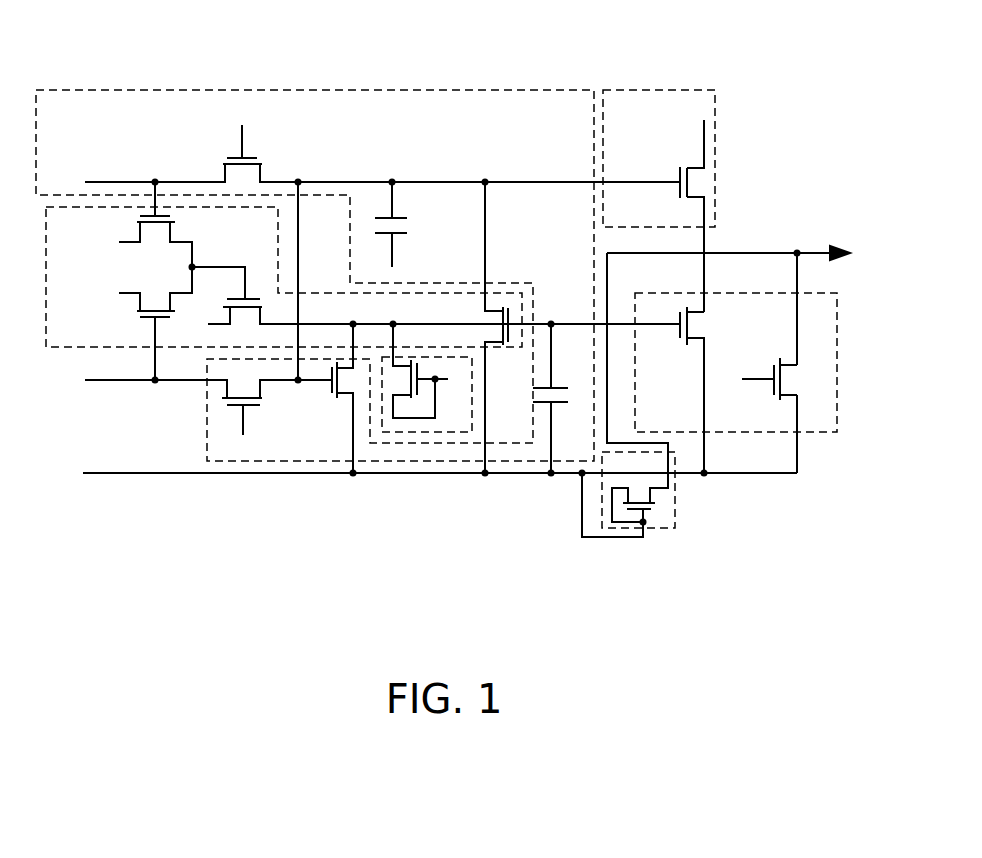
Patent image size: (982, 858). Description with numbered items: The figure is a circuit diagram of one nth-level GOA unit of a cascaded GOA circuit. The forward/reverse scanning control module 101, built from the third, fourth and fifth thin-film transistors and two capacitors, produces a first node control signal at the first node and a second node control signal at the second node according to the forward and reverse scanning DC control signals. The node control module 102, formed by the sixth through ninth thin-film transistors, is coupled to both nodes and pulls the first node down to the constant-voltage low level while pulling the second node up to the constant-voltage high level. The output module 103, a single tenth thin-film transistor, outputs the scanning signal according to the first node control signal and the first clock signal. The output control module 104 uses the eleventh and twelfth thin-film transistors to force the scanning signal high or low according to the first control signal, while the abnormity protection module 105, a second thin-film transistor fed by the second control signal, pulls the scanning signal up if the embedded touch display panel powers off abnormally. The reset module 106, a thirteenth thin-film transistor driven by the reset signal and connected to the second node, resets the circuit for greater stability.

The forward/reverse scanning control module 101 is at (325, 90).
The node control module 102 is at (108, 347).
The output module 103 is at (640, 90).
The output control module 104 is at (835, 401).
The abnormity protection module 105 is at (675, 510).
The reset module 106 is at (410, 432).